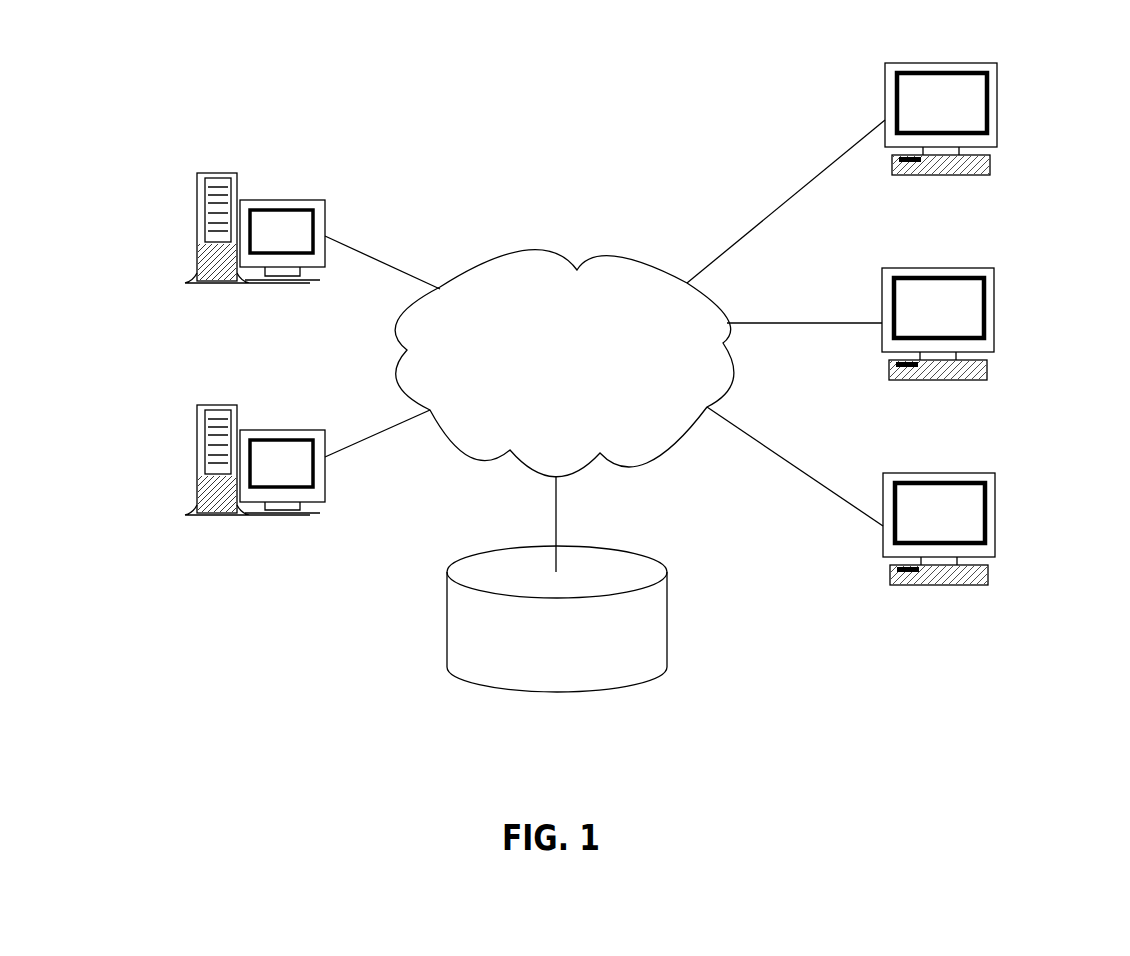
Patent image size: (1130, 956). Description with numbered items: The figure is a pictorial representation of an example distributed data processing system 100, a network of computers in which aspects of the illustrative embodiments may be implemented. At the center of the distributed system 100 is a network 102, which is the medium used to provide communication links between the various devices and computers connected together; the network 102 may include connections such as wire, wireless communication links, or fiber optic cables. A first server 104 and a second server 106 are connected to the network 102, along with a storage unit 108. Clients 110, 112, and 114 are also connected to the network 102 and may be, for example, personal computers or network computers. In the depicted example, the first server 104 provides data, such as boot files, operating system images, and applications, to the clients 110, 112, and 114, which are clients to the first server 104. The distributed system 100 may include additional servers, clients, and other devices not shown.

The distributed system 100 is at (670, 147).
The network 102 is at (533, 252).
The first server 104 is at (197, 232).
The second server 106 is at (197, 460).
The storage unit 108 is at (447, 617).
The client 110 is at (997, 118).
The client 112 is at (994, 323).
The client 114 is at (995, 528).